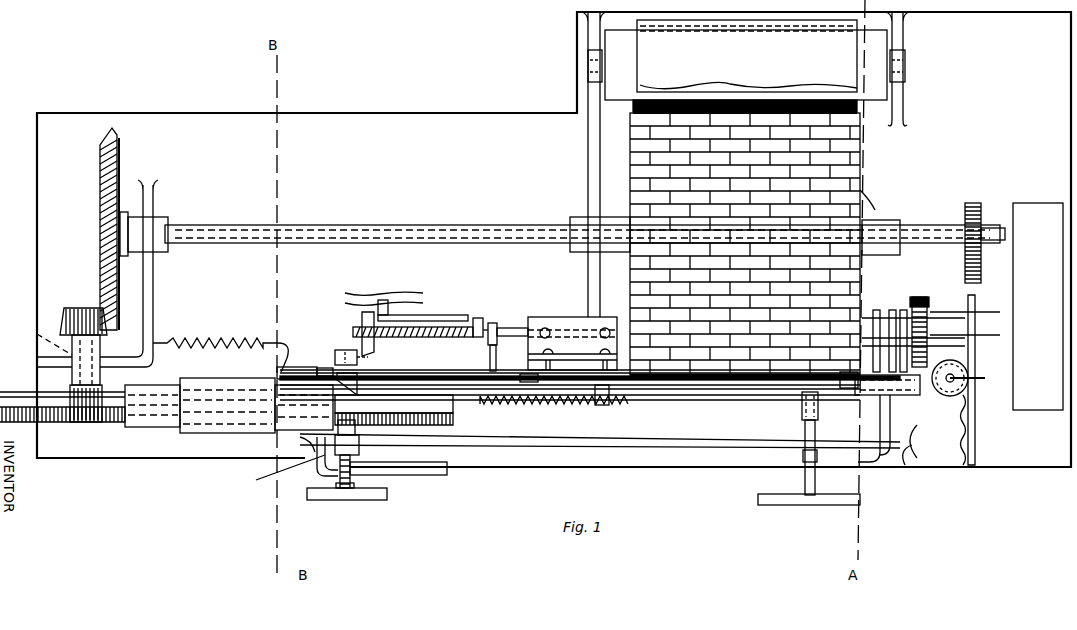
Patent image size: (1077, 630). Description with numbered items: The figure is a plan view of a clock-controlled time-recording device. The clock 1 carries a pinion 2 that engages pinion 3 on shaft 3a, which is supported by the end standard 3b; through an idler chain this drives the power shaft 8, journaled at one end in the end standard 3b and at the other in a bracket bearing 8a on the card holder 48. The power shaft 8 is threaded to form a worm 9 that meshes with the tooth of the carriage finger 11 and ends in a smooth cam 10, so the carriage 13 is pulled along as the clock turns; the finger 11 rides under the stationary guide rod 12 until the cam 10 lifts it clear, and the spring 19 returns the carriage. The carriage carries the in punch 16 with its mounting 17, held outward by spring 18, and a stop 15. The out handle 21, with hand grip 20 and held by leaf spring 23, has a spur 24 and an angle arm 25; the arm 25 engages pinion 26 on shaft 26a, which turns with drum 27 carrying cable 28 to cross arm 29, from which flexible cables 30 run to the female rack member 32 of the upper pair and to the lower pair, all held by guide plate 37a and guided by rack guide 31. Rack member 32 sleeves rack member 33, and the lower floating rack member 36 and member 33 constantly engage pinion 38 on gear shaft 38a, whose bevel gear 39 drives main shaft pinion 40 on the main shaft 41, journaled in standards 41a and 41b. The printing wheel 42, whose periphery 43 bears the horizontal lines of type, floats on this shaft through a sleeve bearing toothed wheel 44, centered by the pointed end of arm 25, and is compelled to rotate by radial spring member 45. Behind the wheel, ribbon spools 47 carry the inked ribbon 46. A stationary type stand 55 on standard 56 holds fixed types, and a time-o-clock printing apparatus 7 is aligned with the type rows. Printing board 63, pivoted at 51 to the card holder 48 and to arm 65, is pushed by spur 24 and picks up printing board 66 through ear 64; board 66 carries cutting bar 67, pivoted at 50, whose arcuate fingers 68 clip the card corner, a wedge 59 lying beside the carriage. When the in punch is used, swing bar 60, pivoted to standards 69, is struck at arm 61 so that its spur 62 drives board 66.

The clock 1 is at (1038, 306).
The pinion 2 is at (918, 297).
The pinion 3 is at (927, 340).
The shaft 3a is at (933, 340).
The end standard 3b is at (950, 320).
The time-o-clock printing apparatus 7 is at (903, 310).
The power shaft 8 is at (515, 328).
The bracket bearing 8a is at (494, 322).
The threaded spindle 9 is at (428, 340).
The smooth cam 10 is at (477, 318).
The carriage finger 11 is at (355, 315).
The guide rod 12 is at (440, 314).
The carriage 13 is at (338, 348).
The stop 15 is at (290, 462).
The punch 16 is at (345, 490).
The base plate 17 is at (366, 500).
The spring 18 is at (356, 485).
The spring 19 is at (242, 340).
The hand grip 20 is at (782, 505).
The out handle 21 is at (804, 432).
The leaf spring 23 is at (800, 414).
The spur 24 is at (803, 458).
The angle arm 25 is at (975, 436).
The pinion 26 is at (950, 396).
The shaft 26a is at (978, 379).
The drum 27 is at (968, 411).
The cable 28 is at (722, 392).
The cross arm 29 is at (606, 402).
The flexible cable 30 is at (468, 390).
The rack 31 is at (525, 400).
The rack member 32 is at (163, 388).
The rack member 33 is at (30, 392).
The rack member 36 is at (45, 422).
The guide plate 37a is at (248, 380).
The pinion 38 is at (98, 420).
The gear shaft 38a is at (37, 336).
The bevel gear 39 is at (60, 318).
The main shaft pinion 40 is at (100, 262).
The main shaft 41 is at (458, 228).
The standard 41a is at (153, 305).
The standard 41b is at (588, 190).
The printing wheel 42 is at (865, 235).
The stack of sheets 43 is at (848, 163).
The toothed wheel 44 is at (972, 203).
The radial spring member 45 is at (993, 228).
The inked ribbon 46 is at (747, 56).
The ribbon spools 47 is at (746, 65).
The card holder 48 is at (470, 360).
The pivot 50 is at (297, 372).
The pivot 51 is at (528, 374).
The stationary type stand 55 is at (578, 350).
The standard 56 is at (575, 310).
The wedge 59 is at (355, 392).
The swing bar 60 is at (670, 442).
The arm 61 is at (436, 476).
The spur 62 is at (896, 408).
The printing board 63 is at (652, 388).
The ear 64 is at (852, 390).
The arm 65 is at (900, 396).
The printing board 66 is at (917, 441).
The cutting bar 67 is at (740, 398).
The arcuate finger 68 is at (288, 344).
The standards 69 is at (300, 437).